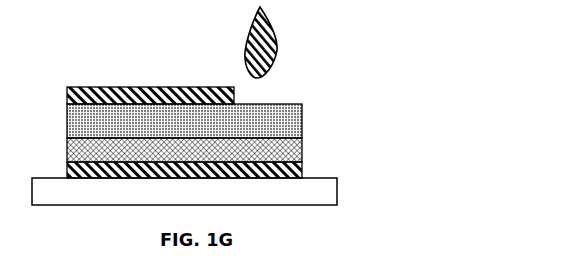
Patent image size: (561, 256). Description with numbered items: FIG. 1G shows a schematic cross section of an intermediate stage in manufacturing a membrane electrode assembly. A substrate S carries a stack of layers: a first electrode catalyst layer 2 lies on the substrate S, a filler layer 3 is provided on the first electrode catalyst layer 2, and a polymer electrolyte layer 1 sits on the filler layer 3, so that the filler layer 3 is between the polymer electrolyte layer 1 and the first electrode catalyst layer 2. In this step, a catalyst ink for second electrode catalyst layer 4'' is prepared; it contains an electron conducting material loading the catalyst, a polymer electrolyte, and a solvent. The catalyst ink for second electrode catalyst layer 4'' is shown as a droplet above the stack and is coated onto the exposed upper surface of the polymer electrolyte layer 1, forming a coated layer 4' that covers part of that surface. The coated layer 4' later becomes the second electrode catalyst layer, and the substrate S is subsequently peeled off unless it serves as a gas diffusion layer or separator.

The polymer electrolyte layer 1 is at (297, 113).
The first electrode catalyst layer 2 is at (302, 170).
The filler layer 3 is at (293, 148).
The coated layer 4' is at (130, 65).
The catalyst ink for second electrode catalyst layer 4'' is at (303, 43).
The substrate S is at (318, 190).